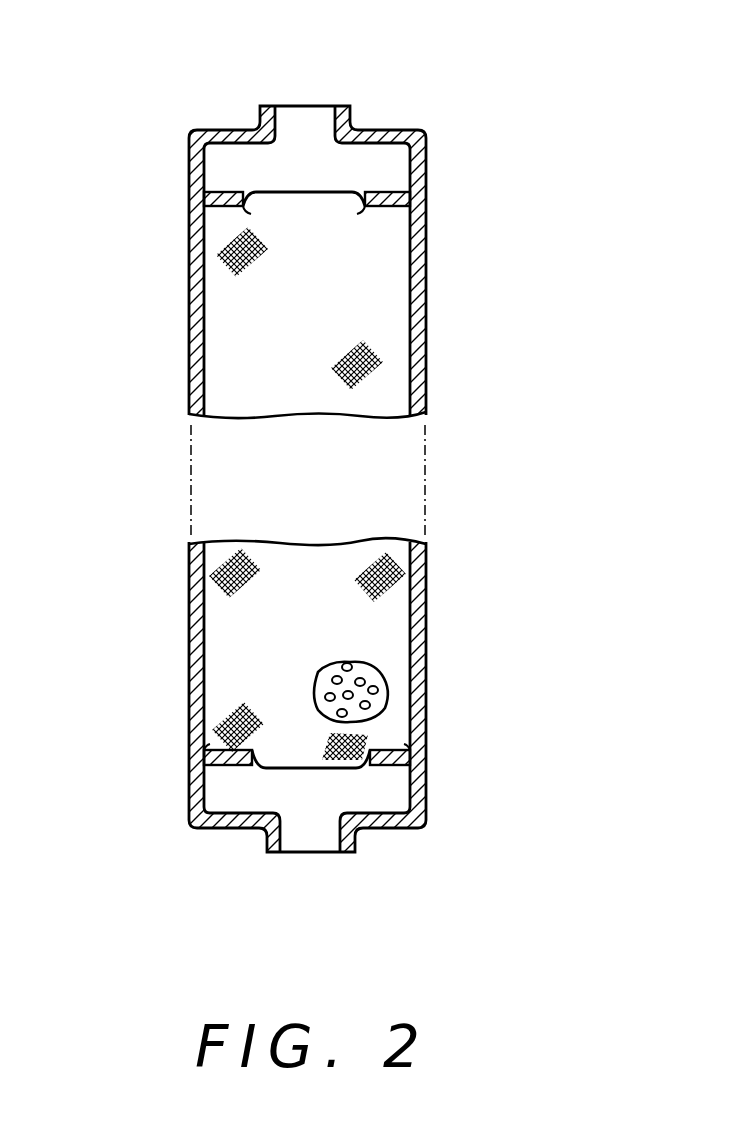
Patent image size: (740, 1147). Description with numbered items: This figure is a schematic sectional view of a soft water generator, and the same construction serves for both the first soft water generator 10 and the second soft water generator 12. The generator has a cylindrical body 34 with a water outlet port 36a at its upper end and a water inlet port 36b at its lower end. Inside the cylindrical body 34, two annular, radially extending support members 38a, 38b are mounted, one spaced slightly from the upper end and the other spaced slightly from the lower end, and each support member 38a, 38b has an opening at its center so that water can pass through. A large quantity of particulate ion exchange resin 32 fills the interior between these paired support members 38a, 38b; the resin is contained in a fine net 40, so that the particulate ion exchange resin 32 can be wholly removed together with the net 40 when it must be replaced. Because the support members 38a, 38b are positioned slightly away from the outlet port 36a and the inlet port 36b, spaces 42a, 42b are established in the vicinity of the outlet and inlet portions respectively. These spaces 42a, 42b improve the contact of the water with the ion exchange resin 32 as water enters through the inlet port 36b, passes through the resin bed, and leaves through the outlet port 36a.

The first soft water generator 10 is at (170, 234).
The second soft water generator 12 is at (305, 482).
The particulate ion exchange resin 32 is at (320, 688).
The cylindrical body 34 is at (197, 342).
The water outlet port 36a is at (308, 120).
The water inlet port 36b is at (298, 835).
The upper support member 38a is at (392, 190).
The lower support member 38b is at (387, 767).
The fine net 40 is at (390, 357).
The upper space 42a is at (280, 157).
The lower space 42b is at (238, 790).